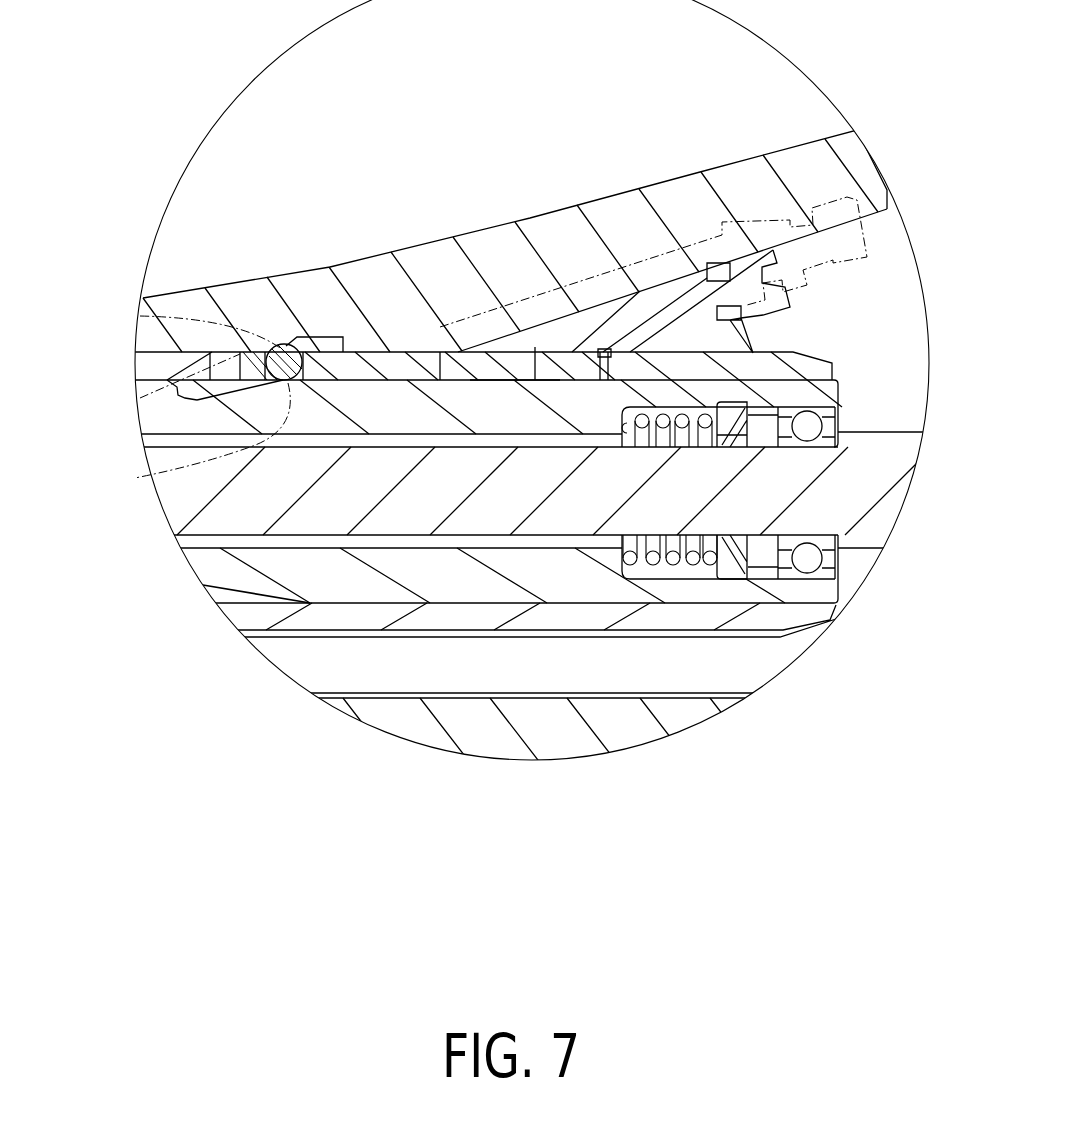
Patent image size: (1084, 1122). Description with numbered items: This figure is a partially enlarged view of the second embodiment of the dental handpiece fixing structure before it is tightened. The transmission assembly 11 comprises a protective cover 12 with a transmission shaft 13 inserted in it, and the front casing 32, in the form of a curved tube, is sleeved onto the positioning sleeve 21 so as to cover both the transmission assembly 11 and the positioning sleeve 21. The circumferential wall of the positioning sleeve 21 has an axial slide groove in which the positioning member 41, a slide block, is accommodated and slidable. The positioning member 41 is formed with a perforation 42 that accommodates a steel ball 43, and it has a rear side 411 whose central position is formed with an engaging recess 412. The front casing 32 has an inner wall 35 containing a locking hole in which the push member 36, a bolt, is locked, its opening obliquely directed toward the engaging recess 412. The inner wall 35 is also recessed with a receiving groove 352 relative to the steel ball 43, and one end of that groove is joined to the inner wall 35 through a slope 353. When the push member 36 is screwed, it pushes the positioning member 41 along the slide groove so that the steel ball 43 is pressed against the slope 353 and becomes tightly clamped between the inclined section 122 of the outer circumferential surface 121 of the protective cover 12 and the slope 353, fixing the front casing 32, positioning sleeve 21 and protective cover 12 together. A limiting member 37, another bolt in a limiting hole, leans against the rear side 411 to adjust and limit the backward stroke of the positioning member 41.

The transmission assembly 11 is at (510, 601).
The protective cover 12 is at (535, 348).
The outer circumferential surface 121 is at (445, 372).
The inclined section 122 is at (196, 354).
The transmission shaft 13 is at (430, 500).
The positioning sleeve 21 is at (573, 629).
The front casing 32 is at (560, 226).
The inner wall 35 is at (170, 392).
The receiving groove 352 is at (322, 338).
The slope 353 is at (248, 350).
The push member 36 is at (650, 250).
The limiting member 37 is at (754, 262).
The positioning member 41 is at (362, 372).
The rear side 411 is at (605, 348).
The engaging recess 412 is at (504, 402).
The perforation 42 is at (185, 403).
The steel ball 43 is at (277, 347).